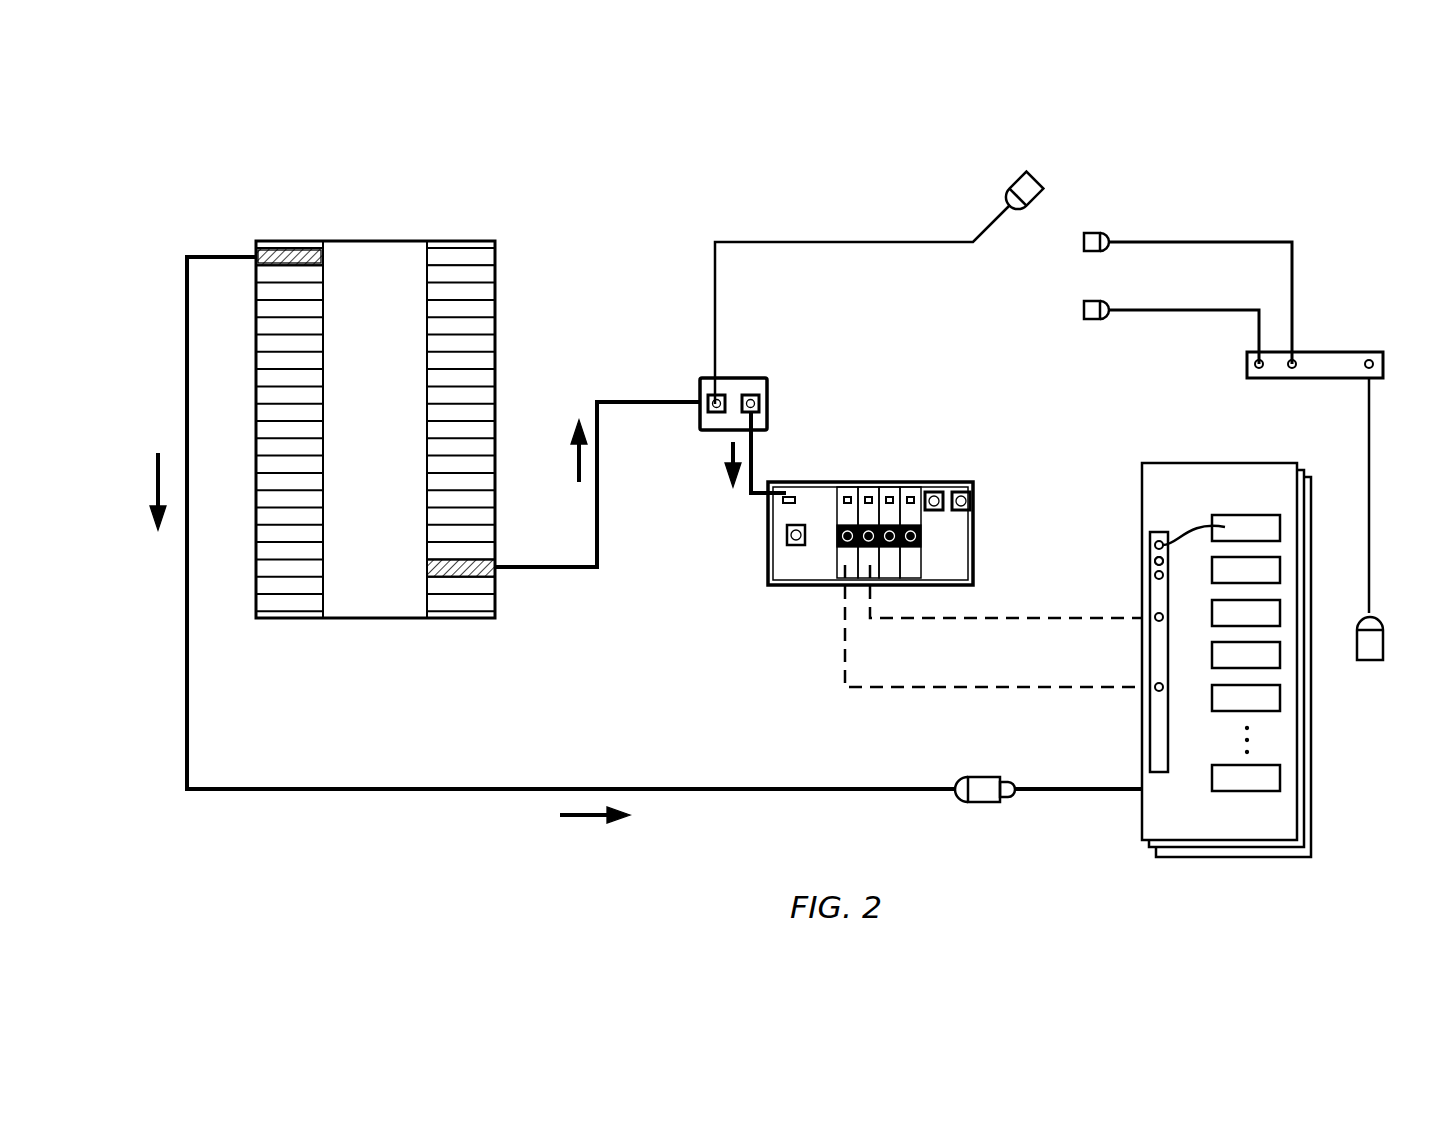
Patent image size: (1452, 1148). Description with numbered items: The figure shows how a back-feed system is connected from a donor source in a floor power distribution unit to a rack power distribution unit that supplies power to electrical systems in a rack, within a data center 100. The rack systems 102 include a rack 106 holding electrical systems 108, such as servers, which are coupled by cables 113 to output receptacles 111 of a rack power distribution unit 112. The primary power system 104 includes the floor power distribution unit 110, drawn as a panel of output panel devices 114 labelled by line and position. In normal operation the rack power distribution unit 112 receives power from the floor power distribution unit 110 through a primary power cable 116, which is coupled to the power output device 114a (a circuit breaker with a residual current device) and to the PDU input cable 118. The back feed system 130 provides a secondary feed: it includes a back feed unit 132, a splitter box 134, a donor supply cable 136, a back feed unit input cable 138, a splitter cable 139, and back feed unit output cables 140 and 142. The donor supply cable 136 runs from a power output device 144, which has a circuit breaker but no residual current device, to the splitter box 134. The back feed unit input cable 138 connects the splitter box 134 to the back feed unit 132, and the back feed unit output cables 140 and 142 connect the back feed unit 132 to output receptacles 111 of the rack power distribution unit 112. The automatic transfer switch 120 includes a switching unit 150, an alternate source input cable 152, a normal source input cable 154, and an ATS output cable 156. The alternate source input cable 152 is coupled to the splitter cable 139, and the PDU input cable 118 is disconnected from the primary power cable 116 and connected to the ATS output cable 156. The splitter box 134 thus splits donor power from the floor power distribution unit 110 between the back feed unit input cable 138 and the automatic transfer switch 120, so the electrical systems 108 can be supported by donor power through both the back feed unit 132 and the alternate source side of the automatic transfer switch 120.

The data center 100 is at (1185, 164).
The rack systems 102 is at (1205, 618).
The primary power system 104 is at (443, 181).
The rack 106 is at (1226, 647).
The electrical systems 108 is at (1243, 515).
The floor power distribution unit 110 is at (462, 241).
The output receptacle 111 is at (1150, 560).
The rack power distribution unit 112 is at (1158, 532).
The cables 113 is at (1195, 545).
The power output device 114 is at (490, 342).
The power output device 114a is at (256, 257).
The primary power cable 116 is at (708, 791).
The PDU input cable 118 is at (1068, 791).
The automatic transfer switch 120 is at (1316, 338).
The back feed system 130 is at (870, 483).
The back feed unit 132 is at (870, 533).
The splitter box 134 is at (744, 378).
The donor supply cable 136 is at (641, 405).
The back feed unit input cable 138 is at (750, 495).
The splitter cable 139 is at (850, 242).
The back feed unit output cable 140 is at (922, 620).
The back feed unit output cable 142 is at (897, 689).
The power output device 144 is at (462, 577).
The switching unit 150 is at (1330, 380).
The alternate source input cable 152 is at (1275, 240).
The normal source input cable 154 is at (1165, 312).
The ATS output cable 156 is at (1370, 568).